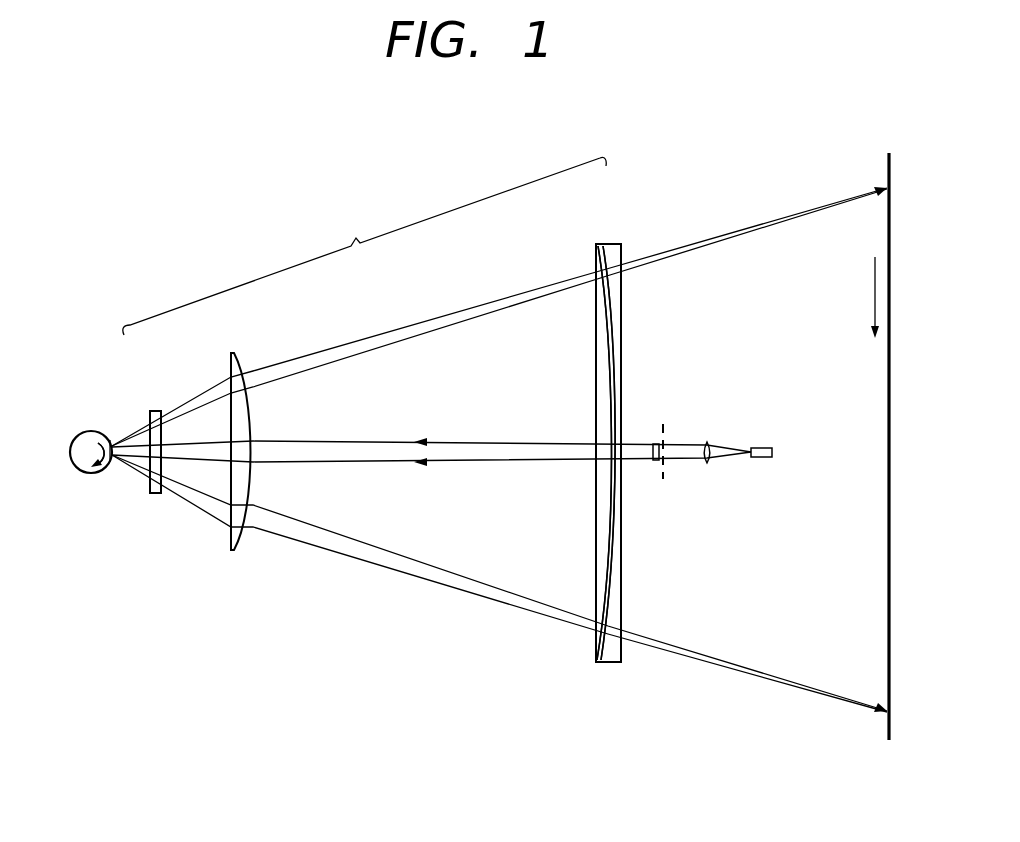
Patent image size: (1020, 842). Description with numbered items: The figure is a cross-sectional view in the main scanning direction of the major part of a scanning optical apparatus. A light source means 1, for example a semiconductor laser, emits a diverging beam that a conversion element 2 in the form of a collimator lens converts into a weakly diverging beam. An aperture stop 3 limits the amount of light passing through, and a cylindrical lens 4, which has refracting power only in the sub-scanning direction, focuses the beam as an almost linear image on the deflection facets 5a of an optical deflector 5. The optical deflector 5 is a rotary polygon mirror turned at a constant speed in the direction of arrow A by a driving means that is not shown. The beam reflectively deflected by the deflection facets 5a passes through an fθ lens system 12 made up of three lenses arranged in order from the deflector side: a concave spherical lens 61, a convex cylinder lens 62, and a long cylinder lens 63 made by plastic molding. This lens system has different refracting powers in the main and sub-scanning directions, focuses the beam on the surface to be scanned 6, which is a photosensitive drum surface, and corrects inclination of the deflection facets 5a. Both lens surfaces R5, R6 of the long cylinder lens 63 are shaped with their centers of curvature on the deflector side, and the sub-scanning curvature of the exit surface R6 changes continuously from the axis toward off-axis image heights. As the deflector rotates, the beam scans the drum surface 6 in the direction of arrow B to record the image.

The light source means 1 is at (771, 448).
The conversion element (collimator lens) 2 is at (709, 442).
The aperture stop 3 is at (665, 425).
The cylindrical lens 4 is at (655, 444).
The optical deflector 5 is at (88, 431).
The deflection facets 5a is at (114, 462).
The surface to be scanned 6 is at (887, 161).
The fθ lens system 12 is at (364, 246).
The concave spherical lens 61 is at (157, 410).
The convex cylinder lens 62 is at (236, 355).
The long cylinder lens 63 is at (600, 244).
The direction of rotation of the optical deflector A is at (90, 473).
The scanning direction on the photosensitive drum surface B is at (875, 290).
The lens surface of the long cylinder lens R5 is at (603, 594).
The exit surface of the long cylinder lens R6 is at (616, 603).